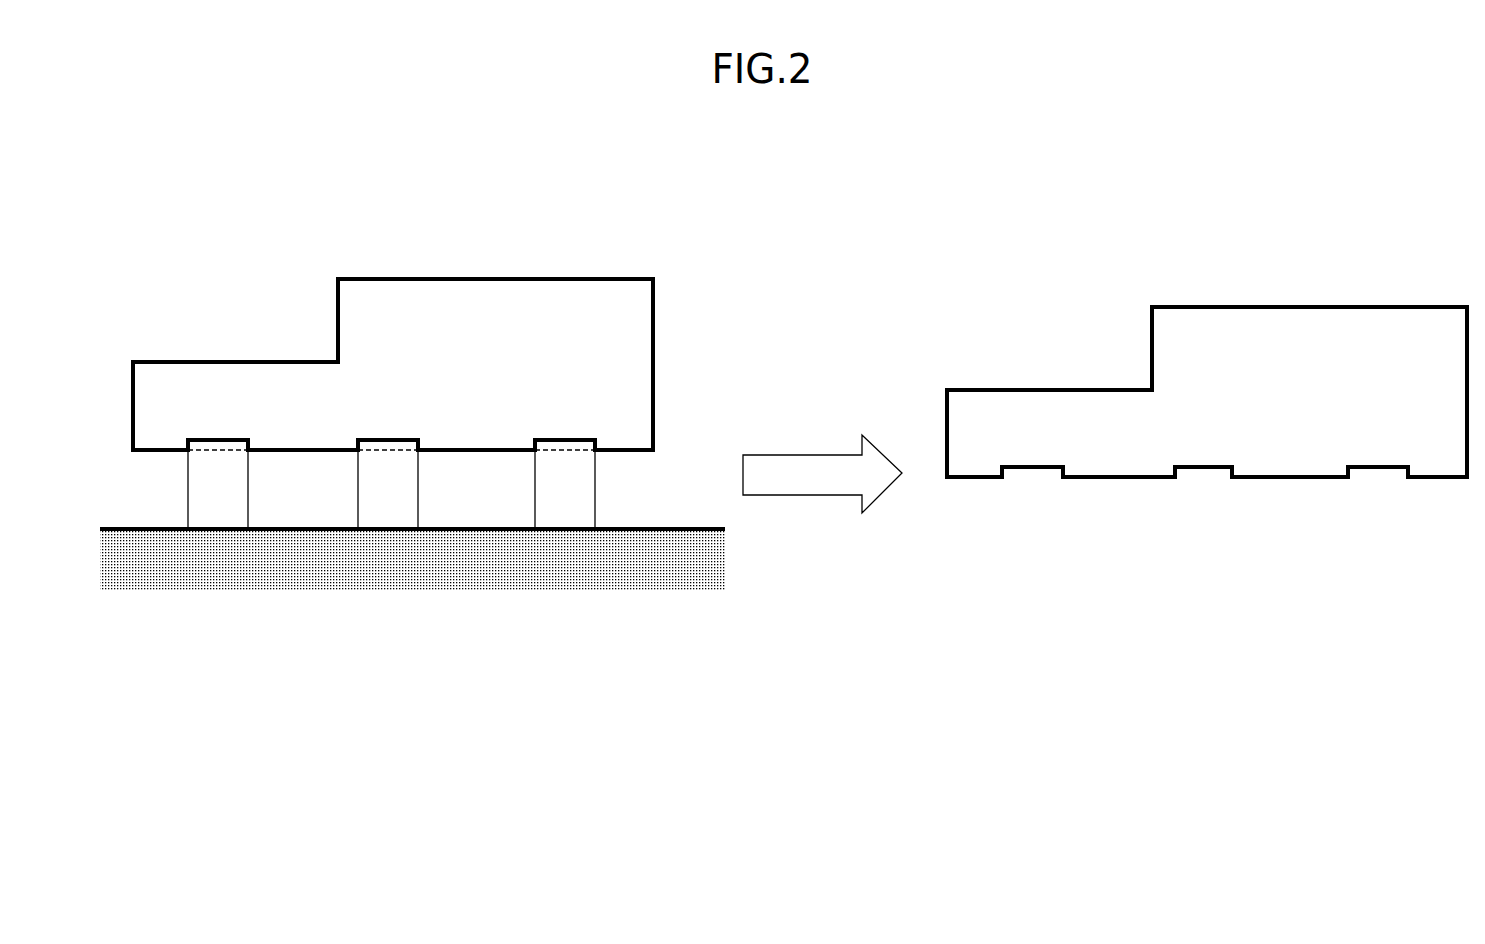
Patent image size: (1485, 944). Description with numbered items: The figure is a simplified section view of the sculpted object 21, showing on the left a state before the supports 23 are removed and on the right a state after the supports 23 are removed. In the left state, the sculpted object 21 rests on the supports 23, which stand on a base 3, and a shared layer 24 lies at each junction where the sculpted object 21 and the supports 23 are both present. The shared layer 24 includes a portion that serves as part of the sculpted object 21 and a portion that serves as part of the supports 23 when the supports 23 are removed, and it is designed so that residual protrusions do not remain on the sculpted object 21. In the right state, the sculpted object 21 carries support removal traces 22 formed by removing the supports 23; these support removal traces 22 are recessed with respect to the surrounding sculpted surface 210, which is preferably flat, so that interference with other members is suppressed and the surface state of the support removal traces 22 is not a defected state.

The sculpted object 21 is at (518, 308).
The shared layer 24 is at (214, 446).
The supports 23 is at (217, 493).
The substrate 3 is at (533, 563).
The support removal traces 22 is at (1038, 470).
The sculpted surface 210 is at (1112, 480).